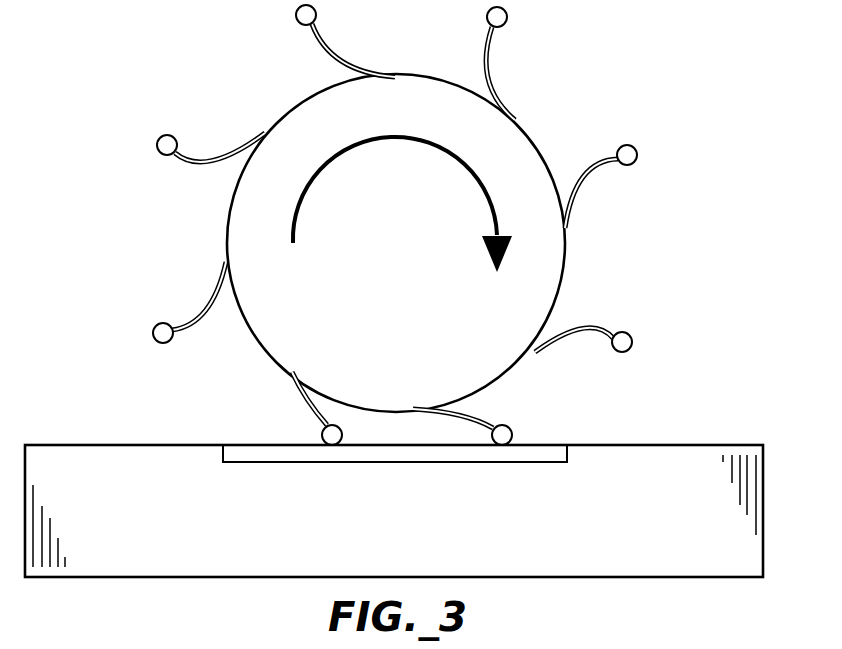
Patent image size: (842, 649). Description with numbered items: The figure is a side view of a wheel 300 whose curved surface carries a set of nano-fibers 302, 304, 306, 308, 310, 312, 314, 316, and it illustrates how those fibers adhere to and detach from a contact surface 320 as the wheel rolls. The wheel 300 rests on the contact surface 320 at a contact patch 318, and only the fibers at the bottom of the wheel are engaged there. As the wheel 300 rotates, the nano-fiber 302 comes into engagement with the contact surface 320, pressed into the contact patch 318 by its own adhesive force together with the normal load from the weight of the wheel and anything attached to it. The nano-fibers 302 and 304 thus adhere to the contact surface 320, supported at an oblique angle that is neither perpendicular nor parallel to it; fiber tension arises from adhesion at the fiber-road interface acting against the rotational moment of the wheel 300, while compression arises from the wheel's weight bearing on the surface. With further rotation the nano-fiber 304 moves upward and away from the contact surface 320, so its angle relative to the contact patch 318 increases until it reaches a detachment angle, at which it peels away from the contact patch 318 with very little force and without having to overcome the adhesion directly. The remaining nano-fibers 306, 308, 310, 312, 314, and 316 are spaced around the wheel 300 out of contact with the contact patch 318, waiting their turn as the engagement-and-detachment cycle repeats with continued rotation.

The wheel 300 is at (533, 143).
The nano-fiber 302 is at (508, 428).
The nano-fiber 304 is at (323, 430).
The nano-fiber 306 is at (158, 324).
The nano-fiber 308 is at (165, 135).
The nano-fiber 310 is at (297, 19).
The nano-fiber 312 is at (507, 21).
The nano-fiber 314 is at (633, 146).
The nano-fiber 316 is at (627, 333).
The contact patch 318 is at (553, 444).
The contact surface 320 is at (687, 444).